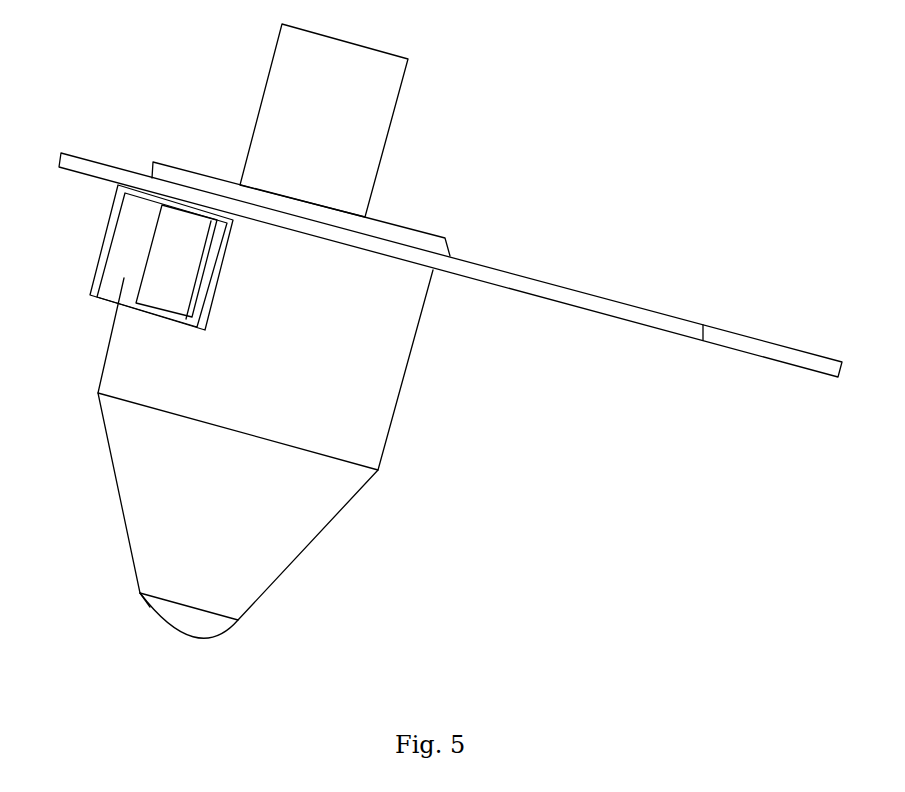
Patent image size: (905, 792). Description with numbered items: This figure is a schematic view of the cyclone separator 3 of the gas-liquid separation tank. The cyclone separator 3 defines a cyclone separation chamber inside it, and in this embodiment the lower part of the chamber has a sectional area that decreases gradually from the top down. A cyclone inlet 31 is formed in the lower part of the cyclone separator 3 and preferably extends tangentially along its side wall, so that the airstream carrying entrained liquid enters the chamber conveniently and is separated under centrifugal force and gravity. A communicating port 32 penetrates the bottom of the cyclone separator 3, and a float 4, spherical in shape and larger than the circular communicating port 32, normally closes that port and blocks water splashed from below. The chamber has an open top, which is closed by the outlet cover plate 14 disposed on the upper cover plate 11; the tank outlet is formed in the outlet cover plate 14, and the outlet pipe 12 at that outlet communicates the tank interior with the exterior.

The upper cover plate 11 is at (760, 347).
The outlet pipe 12 is at (363, 135).
The outlet cover plate 14 is at (407, 237).
The cyclone separator 3 is at (377, 423).
The cyclone inlet 31 is at (127, 277).
The communicating port 32 is at (140, 595).
The float 4 is at (195, 617).